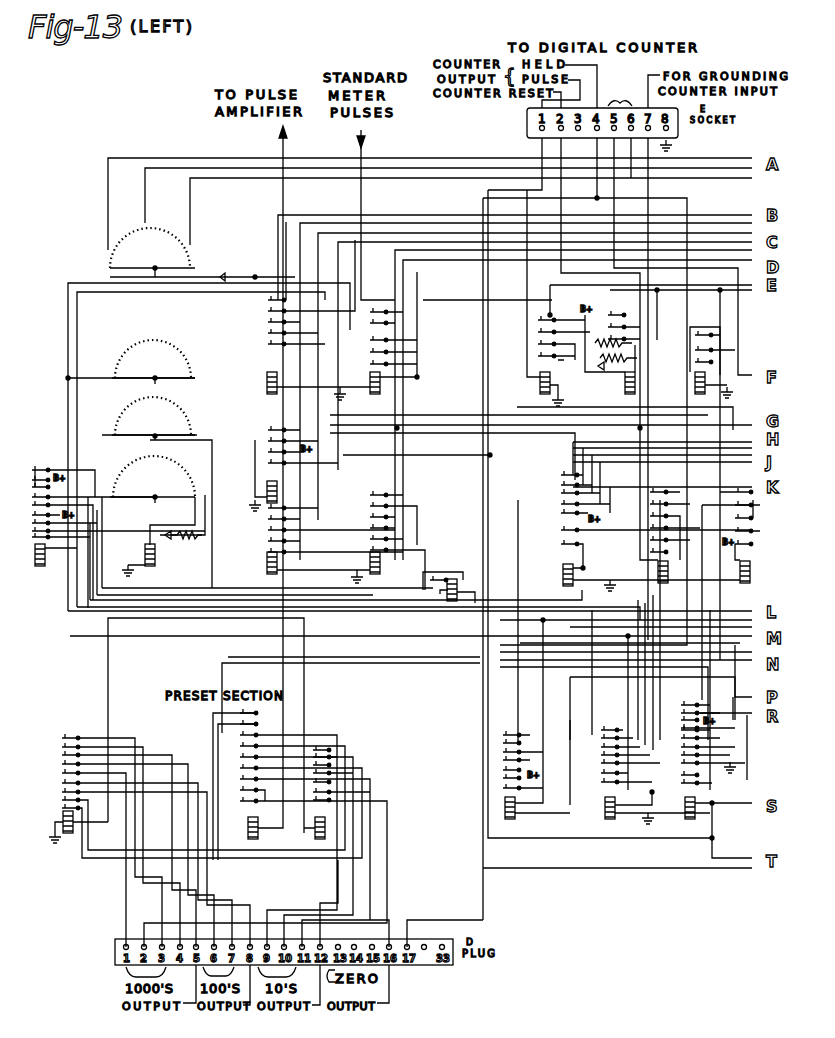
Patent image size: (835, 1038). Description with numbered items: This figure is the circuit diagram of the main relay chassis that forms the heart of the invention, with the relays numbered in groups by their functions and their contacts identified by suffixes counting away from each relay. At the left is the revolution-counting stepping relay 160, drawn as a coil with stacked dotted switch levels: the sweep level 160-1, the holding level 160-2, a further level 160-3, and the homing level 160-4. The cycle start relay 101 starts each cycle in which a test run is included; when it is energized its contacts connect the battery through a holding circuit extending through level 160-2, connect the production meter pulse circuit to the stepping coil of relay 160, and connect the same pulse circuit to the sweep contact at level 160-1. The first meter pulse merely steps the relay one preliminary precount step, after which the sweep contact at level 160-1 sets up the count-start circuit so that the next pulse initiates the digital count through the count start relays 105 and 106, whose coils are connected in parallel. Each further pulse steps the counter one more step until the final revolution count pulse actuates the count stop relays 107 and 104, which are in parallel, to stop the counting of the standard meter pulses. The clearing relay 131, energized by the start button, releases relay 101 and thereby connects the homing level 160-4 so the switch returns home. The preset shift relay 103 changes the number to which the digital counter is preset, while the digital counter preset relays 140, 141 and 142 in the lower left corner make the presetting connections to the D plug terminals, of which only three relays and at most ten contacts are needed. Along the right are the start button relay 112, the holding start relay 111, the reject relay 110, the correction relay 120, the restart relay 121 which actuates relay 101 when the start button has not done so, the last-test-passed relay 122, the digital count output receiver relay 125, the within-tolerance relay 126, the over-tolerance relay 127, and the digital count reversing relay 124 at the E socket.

The cycle start relay 101 is at (42, 536).
The preset shift relay 103 is at (267, 566).
The count stop relay 104 is at (370, 565).
The count start relay 105 is at (267, 494).
The count start relay 106 is at (311, 315).
The count stop relay 107 is at (393, 358).
The reject relay 110 is at (522, 783).
The holding start relay 111 is at (630, 781).
The start button relay 112 is at (713, 781).
The correction relay 120 is at (652, 536).
The restart relay 121 is at (740, 543).
The last test passed relay 122 is at (670, 543).
The digital count reversing relay 124 is at (624, 88).
The digital count output receiver relay 125 is at (558, 361).
The within-tolerance relay 126 is at (612, 356).
The over-tolerance relay 127 is at (707, 364).
The clearing relay 131 is at (445, 580).
The digital counter preset relay 140 is at (258, 780).
The digital counter preset relay 141 is at (337, 797).
The digital counter preset relay 142 is at (63, 822).
The revolution-counting stepping relay 160 is at (146, 564).
The sweep contact level of stepping relay 160-1 is at (151, 252).
The holding level of stepping relay 160-2 is at (143, 369).
The level of stepping relay 160-3 is at (143, 425).
The homing level of stepping relay 160-4 is at (142, 486).